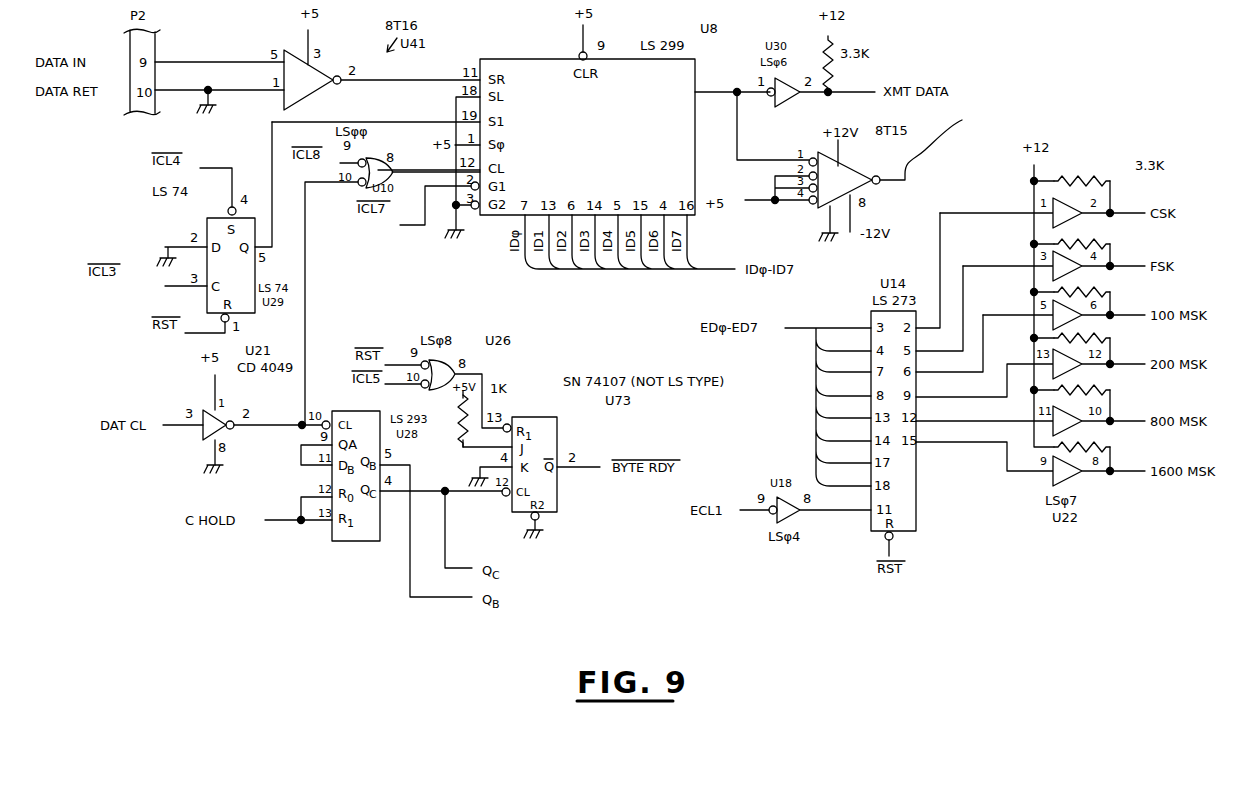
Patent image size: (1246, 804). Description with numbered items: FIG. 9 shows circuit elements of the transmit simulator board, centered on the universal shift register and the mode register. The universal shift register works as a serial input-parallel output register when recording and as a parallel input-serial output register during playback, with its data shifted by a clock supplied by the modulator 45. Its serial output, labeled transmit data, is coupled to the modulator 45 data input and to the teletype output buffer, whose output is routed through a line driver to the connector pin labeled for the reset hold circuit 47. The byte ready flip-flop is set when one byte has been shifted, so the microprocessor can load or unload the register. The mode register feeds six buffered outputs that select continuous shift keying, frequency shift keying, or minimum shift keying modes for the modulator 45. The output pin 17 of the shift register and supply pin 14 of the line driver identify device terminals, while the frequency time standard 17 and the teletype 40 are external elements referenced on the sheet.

The modulator 45 is at (1060, 91).
The TTY (teletype) 40 is at (1032, 119).
The reset hold circuit 47 is at (921, 151).
The frequency time standard 17 is at (720, 91).
The line driver supply pin 14 is at (848, 153).